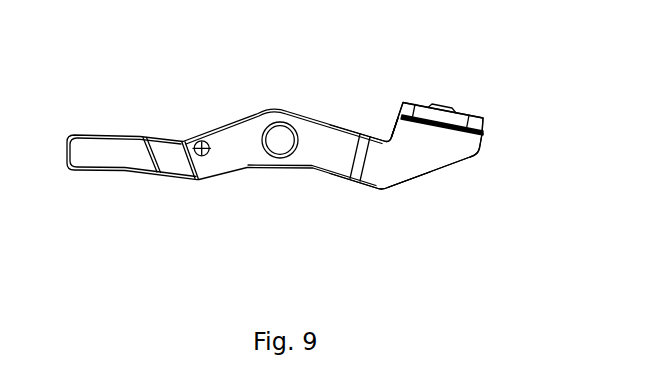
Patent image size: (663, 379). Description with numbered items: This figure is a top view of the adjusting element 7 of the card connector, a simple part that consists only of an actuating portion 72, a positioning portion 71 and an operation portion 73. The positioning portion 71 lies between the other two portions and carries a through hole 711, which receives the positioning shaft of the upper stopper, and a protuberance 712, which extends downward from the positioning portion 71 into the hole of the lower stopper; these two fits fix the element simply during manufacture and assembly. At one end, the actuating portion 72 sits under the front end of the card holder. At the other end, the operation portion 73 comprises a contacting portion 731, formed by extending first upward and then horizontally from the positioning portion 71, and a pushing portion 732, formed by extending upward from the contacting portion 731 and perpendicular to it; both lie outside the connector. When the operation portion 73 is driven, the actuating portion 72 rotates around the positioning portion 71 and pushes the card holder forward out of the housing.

The adjusting element 7 is at (177, 167).
The positioning portion 71 is at (239, 158).
The through hole 711 is at (281, 138).
The protuberance 712 is at (199, 141).
The actuating portion 72 is at (102, 153).
The operation portion 73 is at (390, 165).
The contacting portion 731 is at (430, 150).
The pushing portion 732 is at (457, 118).